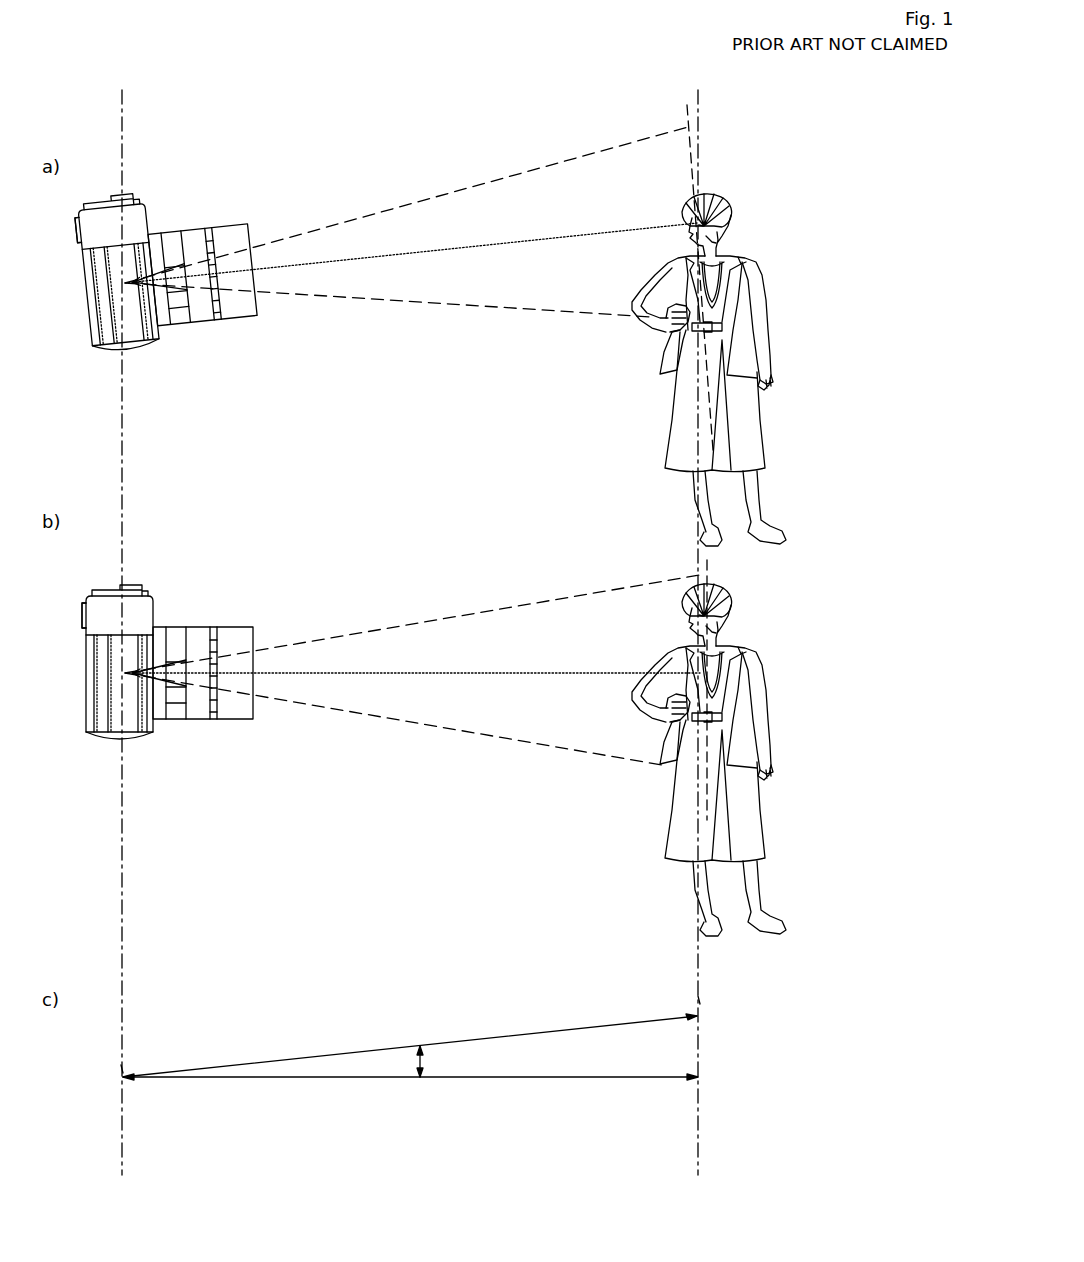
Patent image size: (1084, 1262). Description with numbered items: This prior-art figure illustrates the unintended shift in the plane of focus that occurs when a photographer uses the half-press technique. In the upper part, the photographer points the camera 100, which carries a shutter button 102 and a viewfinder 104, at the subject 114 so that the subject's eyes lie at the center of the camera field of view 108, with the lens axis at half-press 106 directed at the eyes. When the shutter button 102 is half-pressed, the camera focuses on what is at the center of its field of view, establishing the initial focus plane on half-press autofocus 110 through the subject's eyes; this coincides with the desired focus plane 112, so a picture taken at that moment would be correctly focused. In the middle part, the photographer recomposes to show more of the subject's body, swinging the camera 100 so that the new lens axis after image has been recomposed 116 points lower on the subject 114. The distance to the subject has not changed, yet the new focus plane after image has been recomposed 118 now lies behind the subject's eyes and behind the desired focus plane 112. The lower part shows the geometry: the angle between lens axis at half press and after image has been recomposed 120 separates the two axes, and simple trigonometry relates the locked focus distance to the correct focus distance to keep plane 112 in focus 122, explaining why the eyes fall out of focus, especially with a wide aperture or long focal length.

The camera 100 is at (158, 210).
The shutter button 102 is at (130, 182).
The viewfinder 104 is at (75, 230).
The lens axis at half-press 106 is at (482, 240).
The camera field of view 108 is at (480, 182).
The initial focus plane on half-press autofocus 110 is at (680, 120).
The desired focus plane 112 is at (703, 107).
The subject 114 is at (727, 193).
The new lens axis after image has been recomposed 116 is at (493, 665).
The new focus plane after image has been recomposed 118 is at (712, 568).
The angle between lens axis at half press and after image has been recomposed 120 is at (425, 1065).
The correct focus distance to keep plane 112 in focus 122 is at (497, 1075).